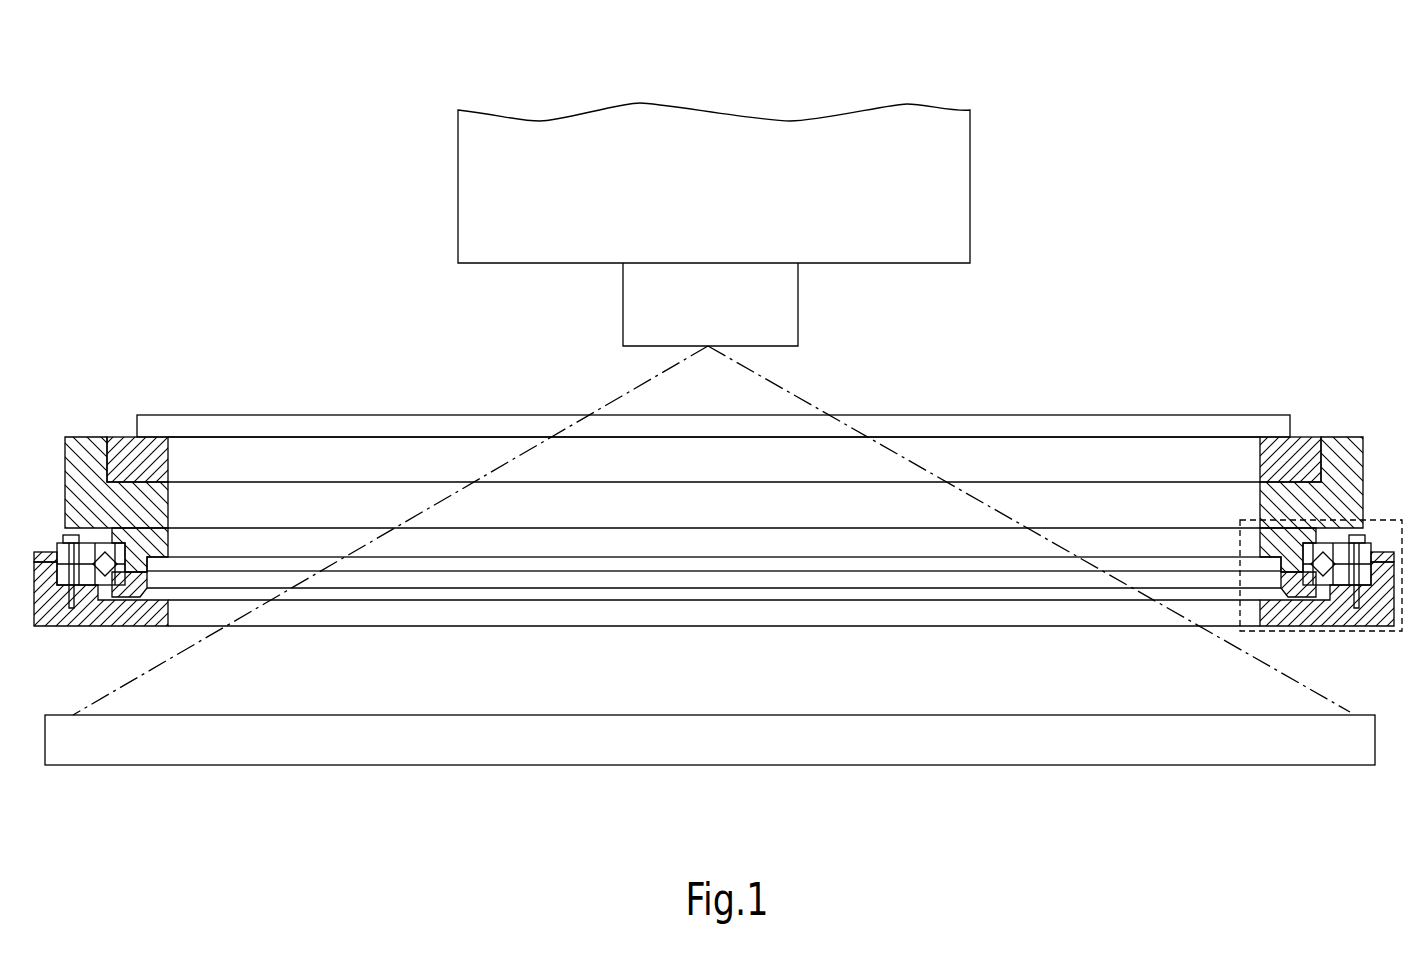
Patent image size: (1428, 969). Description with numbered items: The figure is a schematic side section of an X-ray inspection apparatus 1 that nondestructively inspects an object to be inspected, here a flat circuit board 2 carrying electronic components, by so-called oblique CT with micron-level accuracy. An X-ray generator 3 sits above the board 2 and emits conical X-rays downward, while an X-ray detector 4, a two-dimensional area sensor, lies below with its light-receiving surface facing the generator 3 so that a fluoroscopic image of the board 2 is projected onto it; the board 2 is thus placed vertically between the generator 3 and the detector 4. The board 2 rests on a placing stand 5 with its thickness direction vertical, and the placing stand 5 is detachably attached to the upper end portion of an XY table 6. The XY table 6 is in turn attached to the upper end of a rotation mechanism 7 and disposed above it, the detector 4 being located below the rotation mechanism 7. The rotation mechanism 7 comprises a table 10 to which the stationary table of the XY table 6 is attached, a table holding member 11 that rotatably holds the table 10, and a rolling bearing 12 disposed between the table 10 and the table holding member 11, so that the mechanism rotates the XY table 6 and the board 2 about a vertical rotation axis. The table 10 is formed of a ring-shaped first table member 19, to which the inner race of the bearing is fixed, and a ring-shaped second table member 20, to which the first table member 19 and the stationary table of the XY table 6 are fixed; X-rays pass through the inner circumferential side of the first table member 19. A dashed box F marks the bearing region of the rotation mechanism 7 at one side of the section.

The X-ray inspection apparatus 1 is at (1232, 64).
The board 2 is at (1135, 415).
The X-ray generator 3 is at (970, 190).
The X-ray detector 4 is at (688, 765).
The placing stand 5 is at (1303, 437).
The XY table 6 is at (1343, 437).
The rotation mechanism 7 is at (716, 635).
The table 10 is at (714, 513).
The table holding member 11 is at (1377, 626).
The rolling bearing 12 is at (1365, 540).
The first table member 19 is at (1302, 626).
The second table member 20 is at (1250, 520).
The enlarged region F is at (1238, 636).